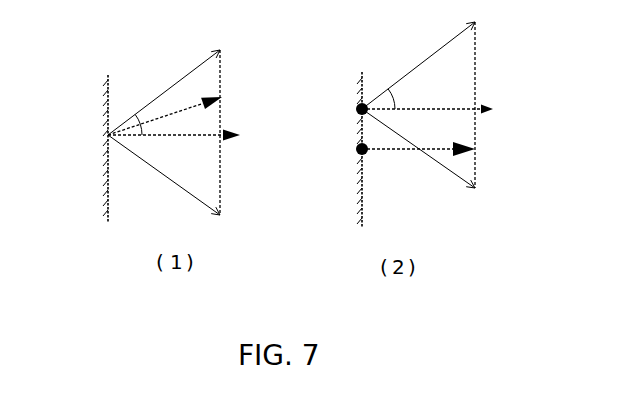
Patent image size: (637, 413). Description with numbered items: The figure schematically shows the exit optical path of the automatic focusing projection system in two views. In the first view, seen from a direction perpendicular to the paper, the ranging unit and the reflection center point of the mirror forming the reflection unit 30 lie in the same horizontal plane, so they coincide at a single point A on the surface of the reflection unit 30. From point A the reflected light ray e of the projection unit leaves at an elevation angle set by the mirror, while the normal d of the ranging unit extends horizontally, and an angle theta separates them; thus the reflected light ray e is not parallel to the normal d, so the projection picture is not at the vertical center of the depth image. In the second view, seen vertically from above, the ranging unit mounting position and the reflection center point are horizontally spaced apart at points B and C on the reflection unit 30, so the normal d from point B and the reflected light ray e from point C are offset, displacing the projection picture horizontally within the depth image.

The reflection unit 30 is at (107, 75).
The point A is at (153, 132).
The point B is at (405, 105).
The point C is at (352, 149).
The normal d is at (313, 122).
The reflected light ray e is at (303, 127).